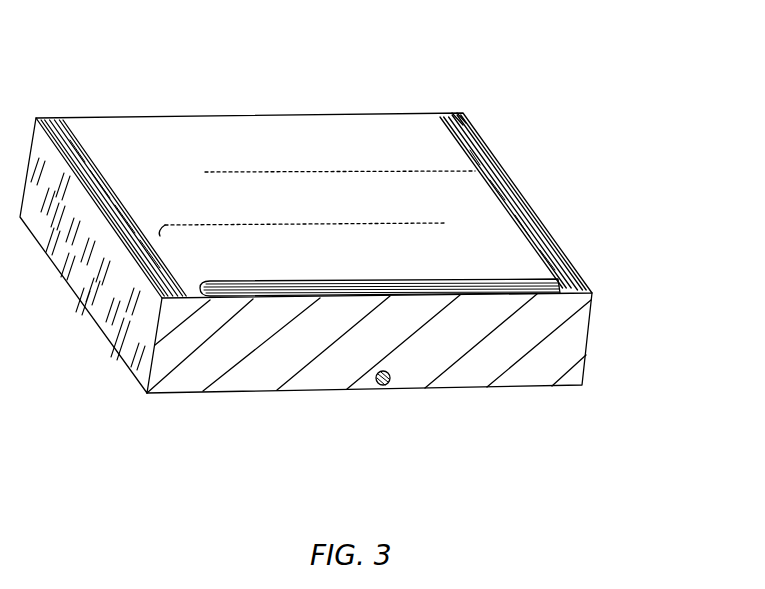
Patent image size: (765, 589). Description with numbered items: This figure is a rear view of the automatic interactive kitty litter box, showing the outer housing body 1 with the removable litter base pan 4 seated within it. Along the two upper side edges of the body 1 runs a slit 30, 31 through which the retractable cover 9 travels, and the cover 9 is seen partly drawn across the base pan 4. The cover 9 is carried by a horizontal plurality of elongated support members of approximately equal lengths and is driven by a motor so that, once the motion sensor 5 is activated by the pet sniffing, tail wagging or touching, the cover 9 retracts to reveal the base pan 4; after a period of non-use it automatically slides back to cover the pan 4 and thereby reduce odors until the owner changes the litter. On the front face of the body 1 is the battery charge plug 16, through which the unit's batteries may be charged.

The body 1 is at (578, 290).
The litter base pan 4 is at (507, 280).
The motion sensor 5 is at (462, 113).
The slit 30 is at (482, 133).
The slit 31 is at (78, 120).
The cover 9 is at (337, 170).
The battery charge plug 16 is at (383, 386).